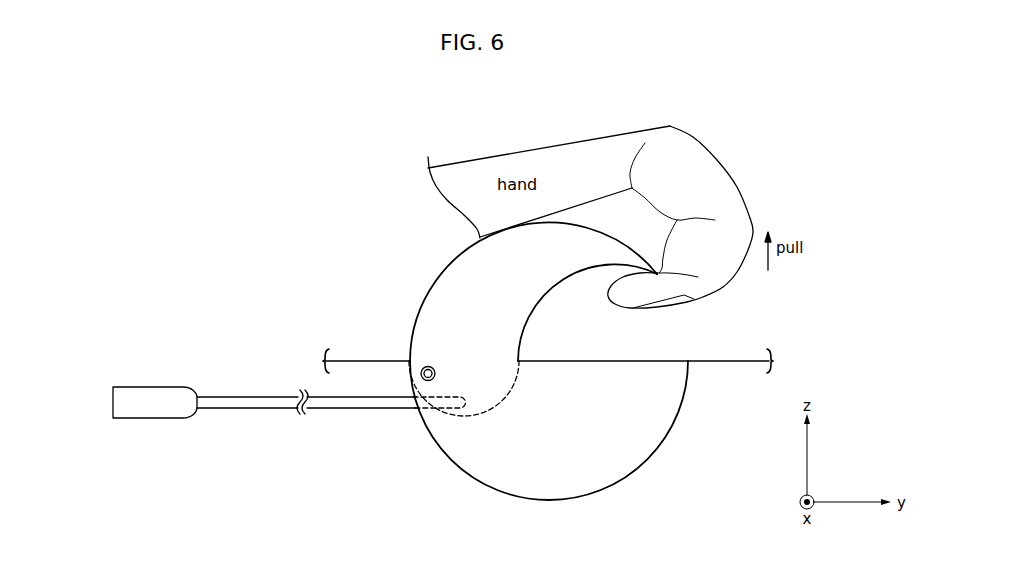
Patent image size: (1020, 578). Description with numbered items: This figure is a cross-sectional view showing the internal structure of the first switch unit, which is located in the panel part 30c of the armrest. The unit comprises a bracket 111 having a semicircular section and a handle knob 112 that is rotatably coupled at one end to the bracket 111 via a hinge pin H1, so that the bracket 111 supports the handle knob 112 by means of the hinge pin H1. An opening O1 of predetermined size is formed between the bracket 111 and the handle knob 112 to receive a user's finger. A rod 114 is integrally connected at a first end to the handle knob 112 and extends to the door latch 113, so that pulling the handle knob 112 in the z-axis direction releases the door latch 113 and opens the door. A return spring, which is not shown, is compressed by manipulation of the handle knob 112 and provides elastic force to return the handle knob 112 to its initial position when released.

The bracket 111 is at (443, 303).
The handle knob 112 is at (653, 428).
The door latch 113 is at (112, 398).
The rod 114 is at (267, 397).
The panel part 30c is at (372, 361).
The hinge pin H1 is at (421, 368).
The opening O1 is at (617, 344).